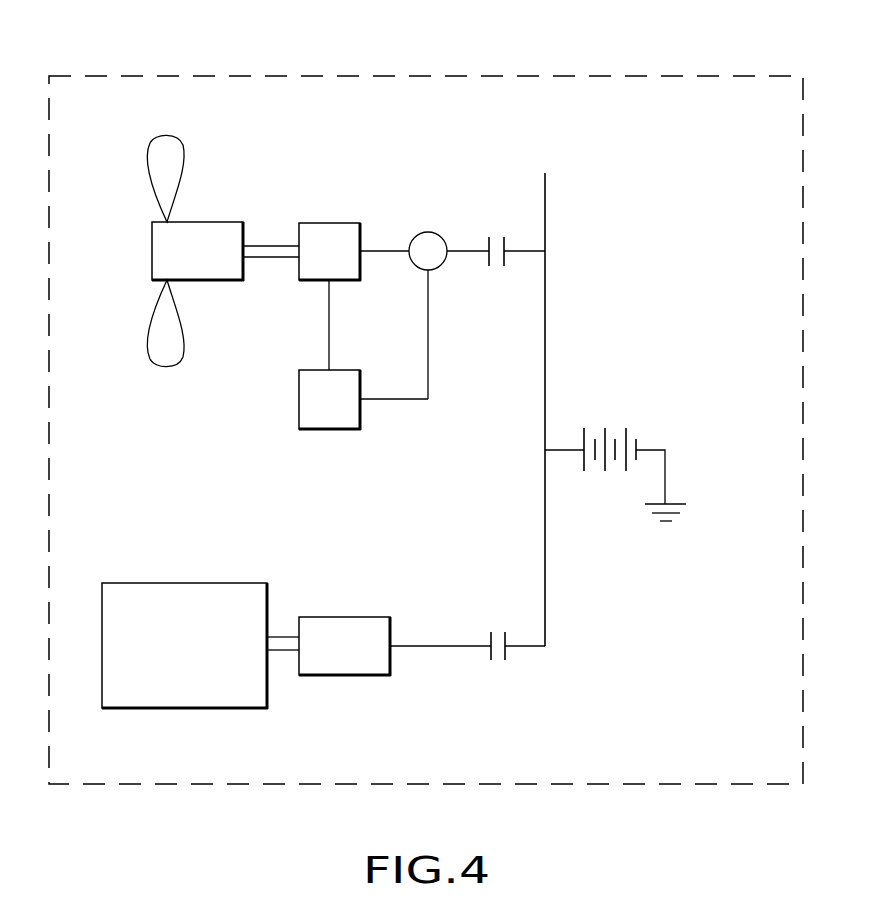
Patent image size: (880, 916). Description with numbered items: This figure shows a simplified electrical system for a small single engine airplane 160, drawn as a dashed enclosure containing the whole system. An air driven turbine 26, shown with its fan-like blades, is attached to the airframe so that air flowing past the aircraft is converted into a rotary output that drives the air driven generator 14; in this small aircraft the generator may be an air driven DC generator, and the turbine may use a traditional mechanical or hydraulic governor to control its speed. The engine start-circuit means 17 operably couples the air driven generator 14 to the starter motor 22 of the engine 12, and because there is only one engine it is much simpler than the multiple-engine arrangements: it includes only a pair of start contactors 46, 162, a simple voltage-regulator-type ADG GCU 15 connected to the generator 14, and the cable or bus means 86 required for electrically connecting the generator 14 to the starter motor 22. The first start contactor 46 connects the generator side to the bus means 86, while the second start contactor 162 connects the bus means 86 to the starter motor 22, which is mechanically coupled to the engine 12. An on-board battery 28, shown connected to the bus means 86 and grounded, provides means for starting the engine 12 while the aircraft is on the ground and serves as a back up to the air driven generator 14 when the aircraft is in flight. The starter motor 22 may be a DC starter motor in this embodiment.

The small single engine airplane 160 is at (612, 75).
The bus means 86 is at (545, 588).
The engine start-circuit means 17 is at (592, 200).
The air driven turbine 26 is at (206, 175).
The air driven generator 14 is at (333, 223).
The ADG GCU 15 is at (335, 429).
The start contactor 46 is at (487, 243).
The on-board battery 28 is at (603, 431).
The engine 12 is at (187, 583).
The starter motor 22 is at (358, 617).
The start contactor 162 is at (489, 655).